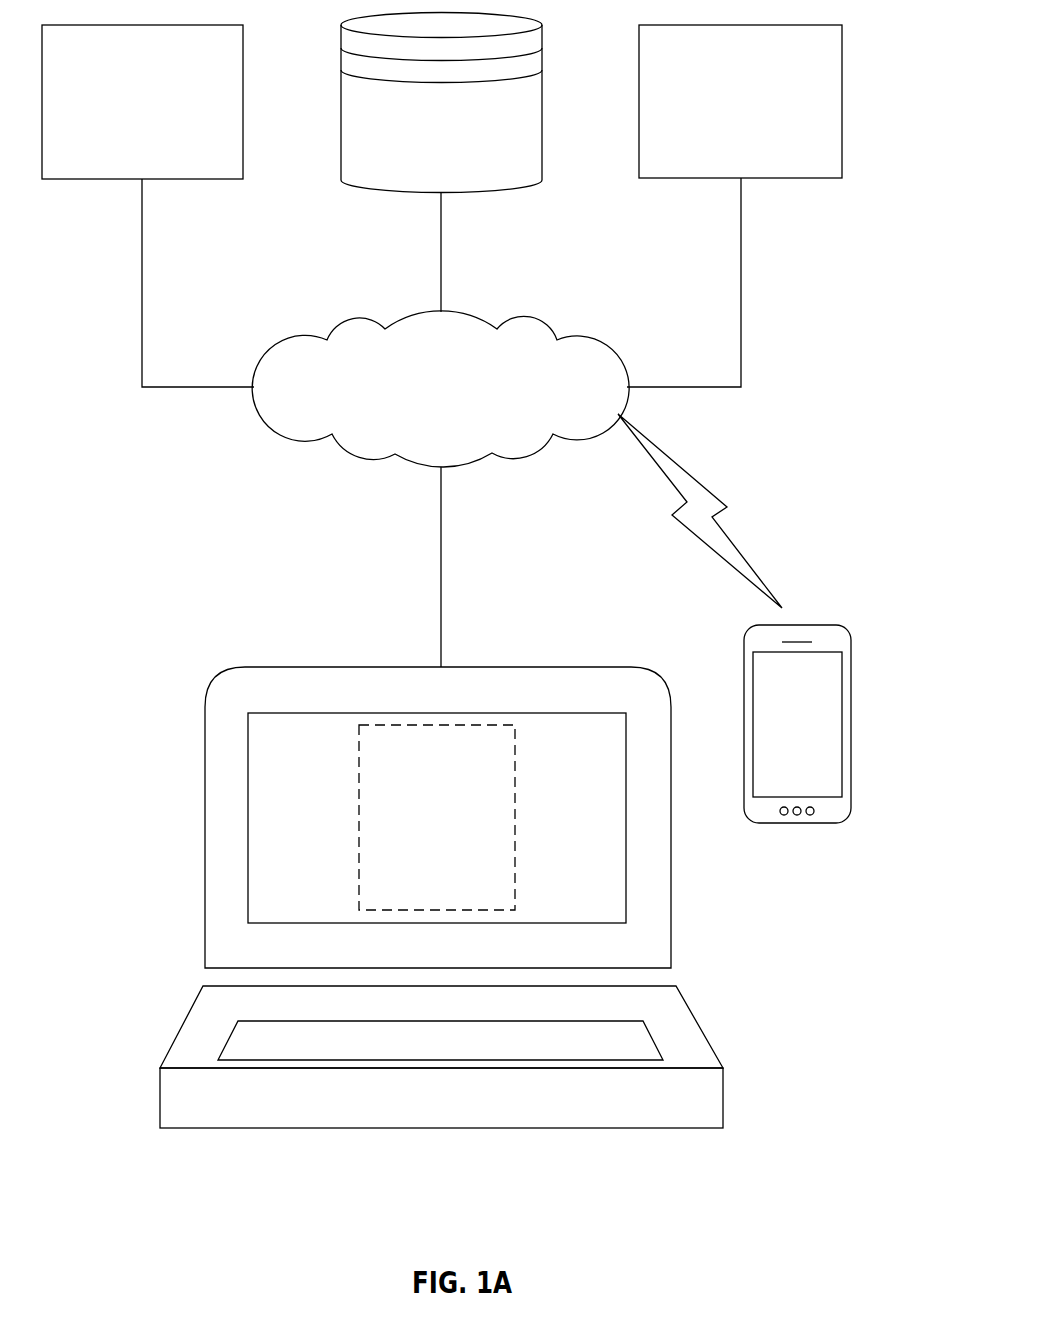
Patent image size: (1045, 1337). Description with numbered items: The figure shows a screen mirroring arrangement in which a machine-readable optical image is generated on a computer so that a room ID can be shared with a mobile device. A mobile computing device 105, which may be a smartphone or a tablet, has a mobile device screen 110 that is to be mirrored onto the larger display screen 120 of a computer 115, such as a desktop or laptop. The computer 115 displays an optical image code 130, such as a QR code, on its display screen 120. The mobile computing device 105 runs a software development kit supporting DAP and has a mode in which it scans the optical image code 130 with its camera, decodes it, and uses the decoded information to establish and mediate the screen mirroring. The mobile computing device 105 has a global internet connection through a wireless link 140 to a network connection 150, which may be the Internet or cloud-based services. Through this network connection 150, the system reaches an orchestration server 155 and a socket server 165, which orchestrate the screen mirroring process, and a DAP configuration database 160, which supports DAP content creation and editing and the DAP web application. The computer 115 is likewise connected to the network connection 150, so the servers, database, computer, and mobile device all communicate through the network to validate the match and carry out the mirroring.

The mobile computing device 105 is at (822, 792).
The mobile device screen 110 is at (831, 683).
The computer 115 is at (723, 1095).
The display screen 120 is at (482, 834).
The optical image code 130 is at (458, 890).
The wireless link 140 is at (727, 507).
The network connection 150 is at (420, 403).
The orchestration server 155 is at (163, 163).
The DAP configuration database 160 is at (463, 163).
The socket server 165 is at (763, 163).